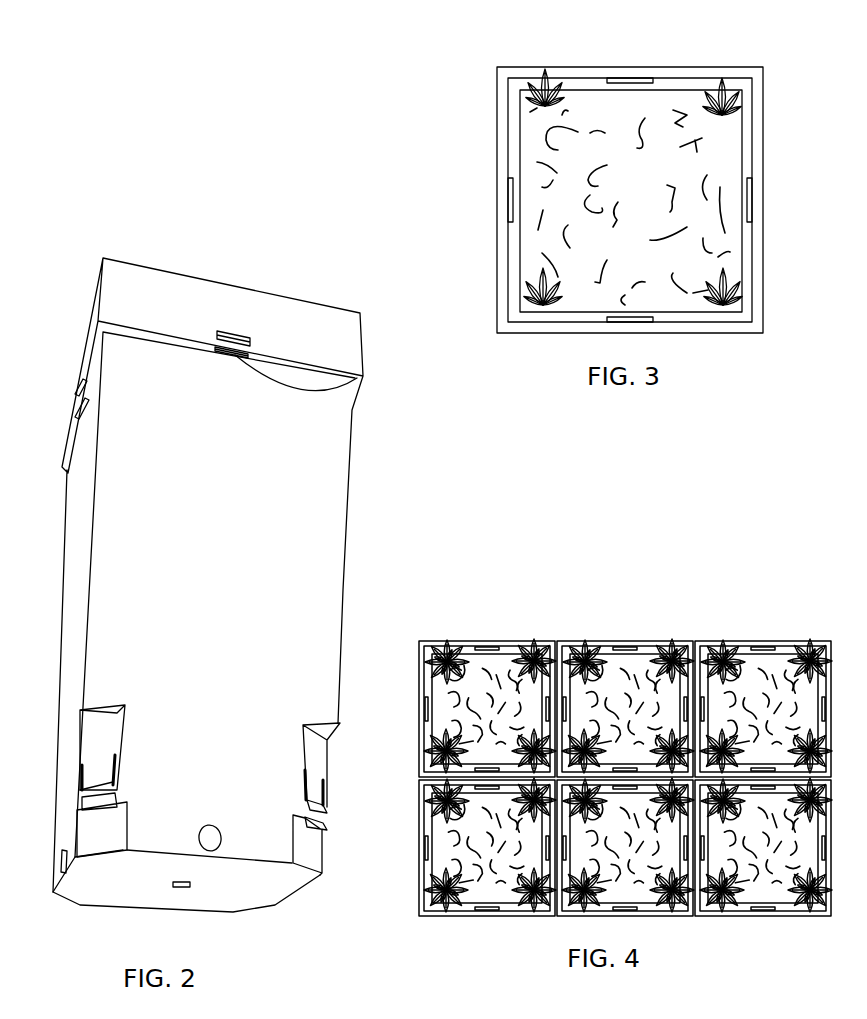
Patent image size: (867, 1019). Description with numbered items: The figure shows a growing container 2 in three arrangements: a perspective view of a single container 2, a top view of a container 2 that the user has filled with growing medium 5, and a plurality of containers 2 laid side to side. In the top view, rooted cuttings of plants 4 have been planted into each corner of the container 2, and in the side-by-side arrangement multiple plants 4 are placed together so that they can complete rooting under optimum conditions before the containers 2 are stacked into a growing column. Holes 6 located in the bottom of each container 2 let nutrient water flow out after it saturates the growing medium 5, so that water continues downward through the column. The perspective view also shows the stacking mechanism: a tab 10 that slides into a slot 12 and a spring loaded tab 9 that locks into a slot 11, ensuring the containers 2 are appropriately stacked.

In FIG. 2, the container 2 is at (338, 517).
In FIG. 3, the container 2 is at (486, 180).
In FIG. 4, the container 2 is at (619, 641).
In FIG. 3, the plants 4 is at (525, 102).
In FIG. 4, the plants 4 is at (532, 642).
In FIG. 3, the growing medium 5 is at (615, 103).
In FIG. 2, the holes 6 is at (63, 857).
In FIG. 2, the spring loaded tab 9 is at (90, 785).
In FIG. 2, the tab 10 is at (83, 805).
In FIG. 2, the slot 11 is at (237, 333).
In FIG. 2, the slot 12 is at (363, 376).